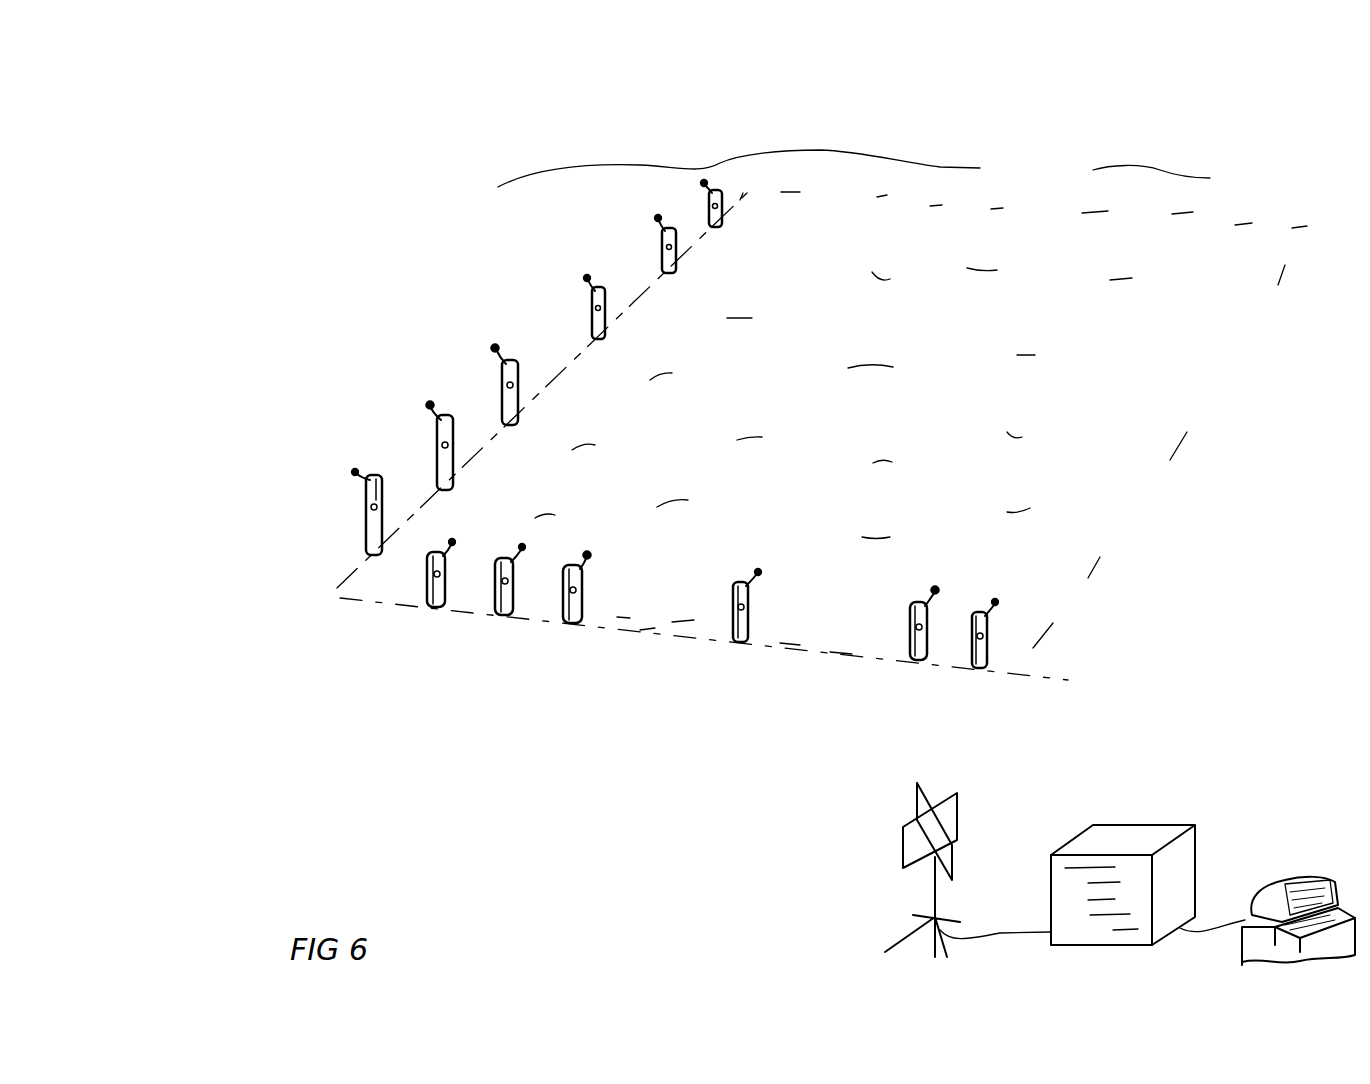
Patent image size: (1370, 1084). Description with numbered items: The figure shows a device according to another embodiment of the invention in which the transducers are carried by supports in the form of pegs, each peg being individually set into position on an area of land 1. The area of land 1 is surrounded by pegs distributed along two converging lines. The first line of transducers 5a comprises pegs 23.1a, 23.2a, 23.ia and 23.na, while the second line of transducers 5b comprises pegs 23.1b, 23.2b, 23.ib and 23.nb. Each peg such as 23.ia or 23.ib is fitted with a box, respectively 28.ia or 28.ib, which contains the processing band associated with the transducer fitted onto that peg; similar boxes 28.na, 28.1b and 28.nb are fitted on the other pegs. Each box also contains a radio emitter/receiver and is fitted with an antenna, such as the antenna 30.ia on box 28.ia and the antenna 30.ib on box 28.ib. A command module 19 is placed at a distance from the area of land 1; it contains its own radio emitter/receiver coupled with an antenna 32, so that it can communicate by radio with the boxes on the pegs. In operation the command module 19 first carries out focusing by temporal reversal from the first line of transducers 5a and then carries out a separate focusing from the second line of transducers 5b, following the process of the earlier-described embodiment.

The area of land 1 is at (1183, 335).
The first line of transducers 5a is at (344, 578).
The second line of transducers 5b is at (398, 601).
The command module 19 is at (1125, 838).
The peg 23.1a is at (720, 192).
The peg 23.2a is at (678, 230).
The peg 23.ia is at (580, 281).
The peg 23.na is at (291, 490).
The peg 23.1b is at (464, 663).
The peg 23.2b is at (512, 614).
The peg 23.ib is at (758, 620).
The peg 23.nb is at (1088, 669).
The box 28.ia is at (592, 310).
The box 28.na is at (366, 507).
The box 28.1b is at (446, 577).
The box 28.ib is at (748, 605).
The box 28.nb is at (987, 630).
The antenna 30.ia is at (588, 277).
The antenna 30.ib is at (759, 571).
The antenna 32 is at (916, 865).